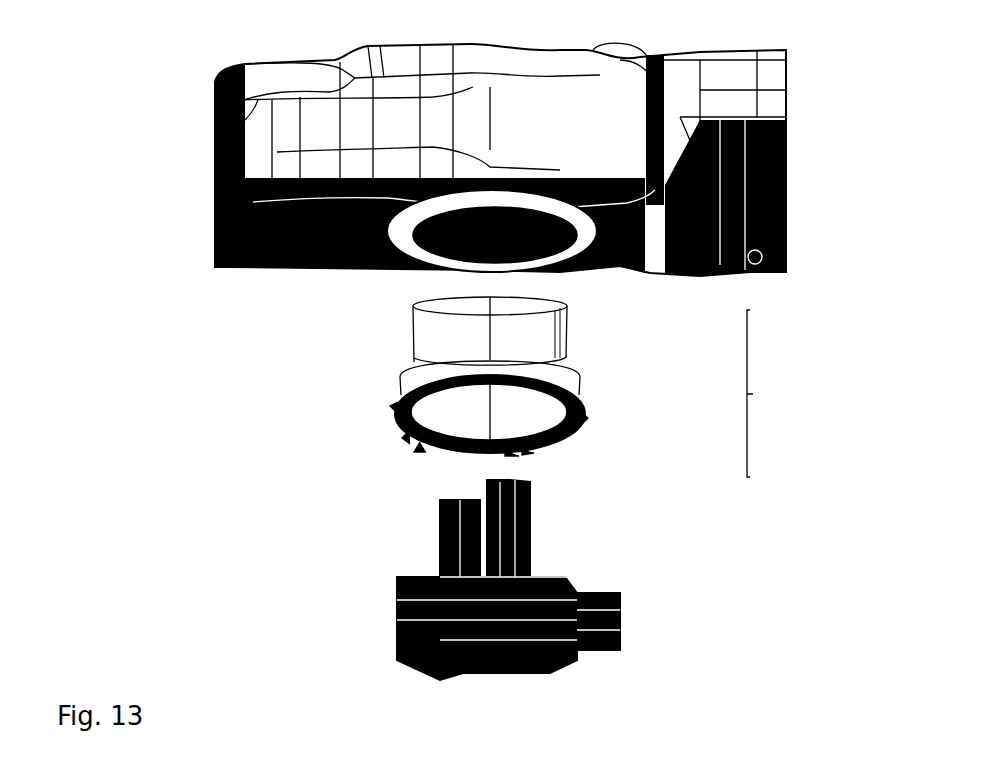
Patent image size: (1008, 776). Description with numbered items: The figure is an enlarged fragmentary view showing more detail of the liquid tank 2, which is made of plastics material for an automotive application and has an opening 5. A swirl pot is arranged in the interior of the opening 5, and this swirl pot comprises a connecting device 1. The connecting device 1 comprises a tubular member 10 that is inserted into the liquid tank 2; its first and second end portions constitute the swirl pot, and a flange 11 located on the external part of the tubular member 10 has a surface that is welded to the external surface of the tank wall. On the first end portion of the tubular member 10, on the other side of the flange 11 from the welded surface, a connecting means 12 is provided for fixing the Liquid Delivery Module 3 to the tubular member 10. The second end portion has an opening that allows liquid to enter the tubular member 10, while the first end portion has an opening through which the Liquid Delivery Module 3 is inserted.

The connecting device 1 is at (773, 393).
The liquid tank 2 is at (188, 208).
The Liquid Delivery Module 3 is at (609, 550).
The opening 5 is at (443, 259).
The tubular member 10 is at (584, 340).
The flange 11 is at (592, 395).
The connecting means 12 is at (592, 424).